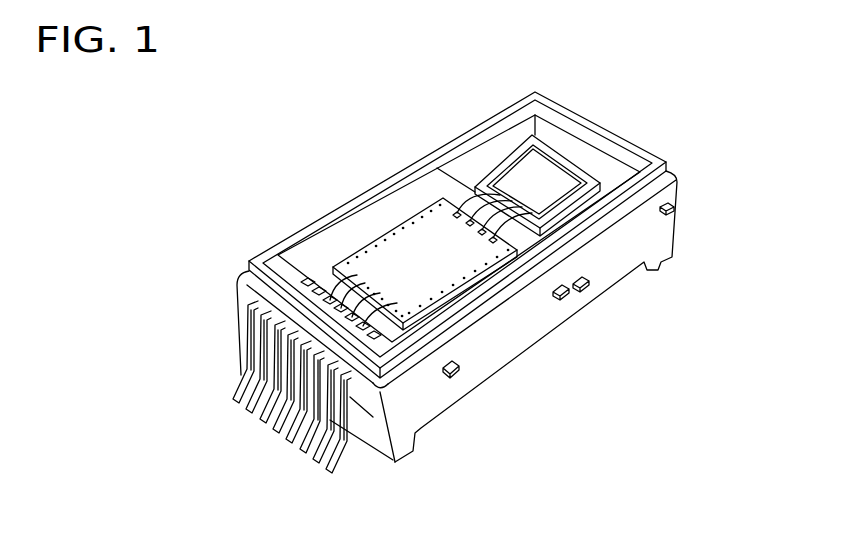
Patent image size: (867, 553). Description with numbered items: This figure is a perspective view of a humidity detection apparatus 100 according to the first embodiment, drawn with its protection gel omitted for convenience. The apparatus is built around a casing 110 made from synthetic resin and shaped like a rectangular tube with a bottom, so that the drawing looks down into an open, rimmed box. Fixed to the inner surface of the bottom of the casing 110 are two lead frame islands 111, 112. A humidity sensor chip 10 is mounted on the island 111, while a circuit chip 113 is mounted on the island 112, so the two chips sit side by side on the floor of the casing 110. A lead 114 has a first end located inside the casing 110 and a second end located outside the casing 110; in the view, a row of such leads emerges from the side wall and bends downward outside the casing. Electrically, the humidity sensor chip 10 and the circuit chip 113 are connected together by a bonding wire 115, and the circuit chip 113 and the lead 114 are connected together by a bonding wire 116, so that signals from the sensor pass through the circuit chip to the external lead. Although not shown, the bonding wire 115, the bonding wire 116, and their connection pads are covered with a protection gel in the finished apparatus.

The humidity detection apparatus 100 is at (700, 142).
The casing 110 is at (618, 138).
The humidity sensor chip 10 is at (512, 162).
The lead frame island 111 is at (466, 188).
The lead frame island 112 is at (327, 270).
The circuit chip 113 is at (446, 268).
The lead 114 is at (340, 450).
The bonding wire 115 is at (461, 212).
The bonding wire 116 is at (397, 333).